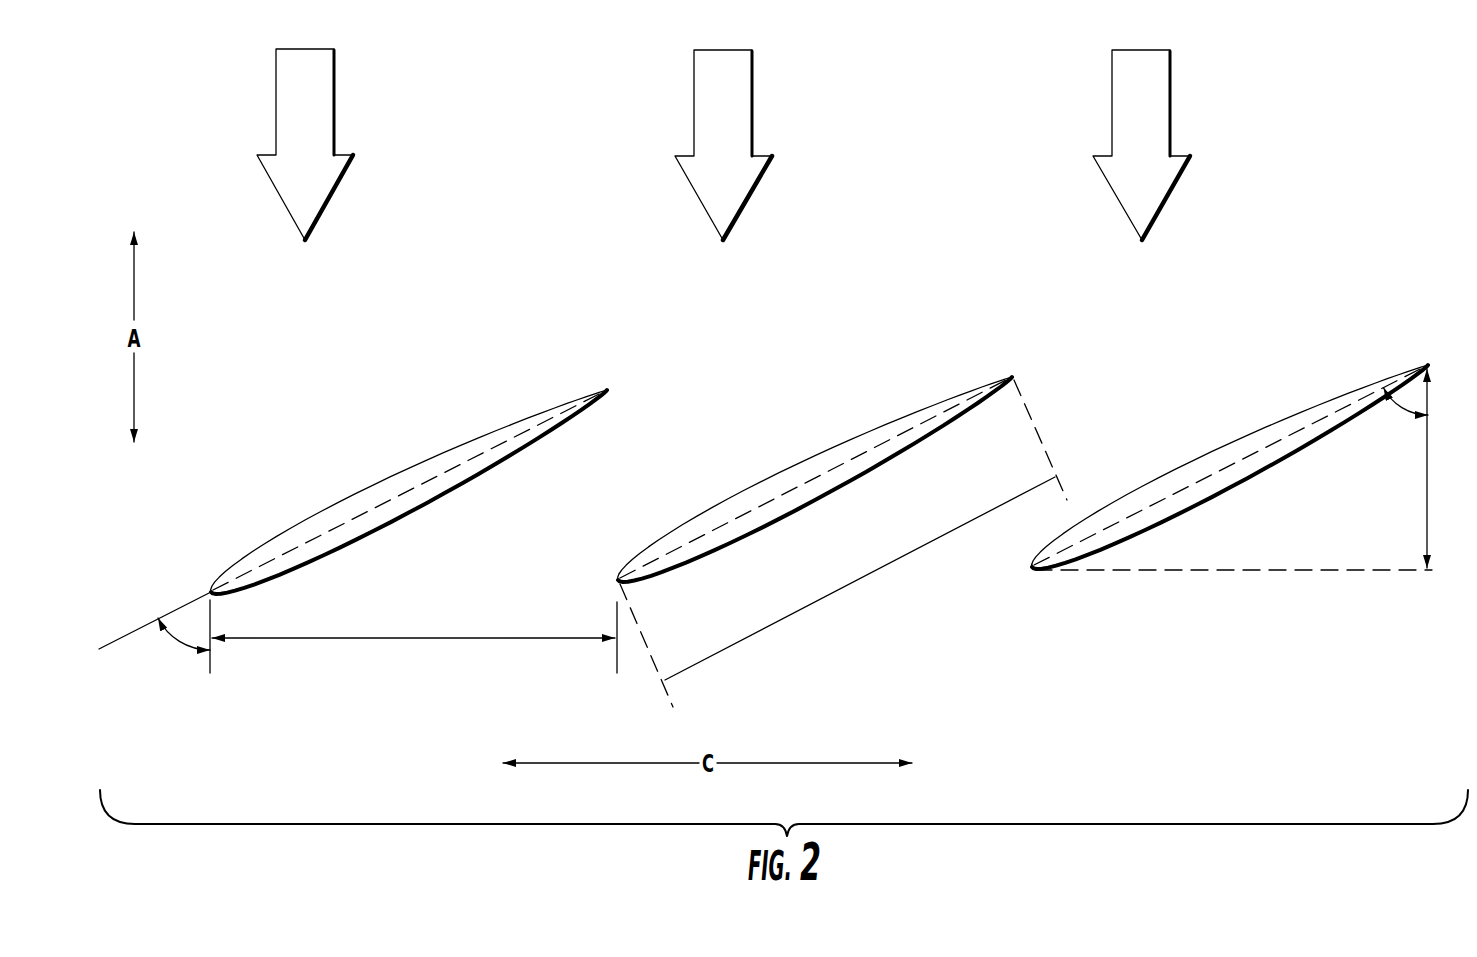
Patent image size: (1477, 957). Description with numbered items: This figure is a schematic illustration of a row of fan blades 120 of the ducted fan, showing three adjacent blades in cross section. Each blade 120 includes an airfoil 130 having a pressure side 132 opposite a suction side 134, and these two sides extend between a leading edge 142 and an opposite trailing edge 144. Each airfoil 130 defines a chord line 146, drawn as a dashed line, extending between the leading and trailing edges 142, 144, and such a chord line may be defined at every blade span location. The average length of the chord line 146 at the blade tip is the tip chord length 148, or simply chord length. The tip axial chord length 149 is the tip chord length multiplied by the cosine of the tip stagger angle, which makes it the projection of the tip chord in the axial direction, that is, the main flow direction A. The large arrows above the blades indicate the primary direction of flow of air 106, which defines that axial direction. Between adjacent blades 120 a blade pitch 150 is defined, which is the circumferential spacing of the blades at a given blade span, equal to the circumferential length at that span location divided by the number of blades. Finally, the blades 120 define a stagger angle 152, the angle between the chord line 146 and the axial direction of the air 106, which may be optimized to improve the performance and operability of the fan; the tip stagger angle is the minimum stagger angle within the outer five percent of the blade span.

The air 106 is at (738, 93).
The blade 120 is at (460, 438).
The airfoil 130 is at (368, 502).
The pressure side 132 is at (1249, 490).
The suction side 134 is at (1245, 430).
The leading edge 142 is at (1431, 363).
The trailing edge 144 is at (1031, 571).
The chord line 146 is at (537, 425).
The tip chord length 148 is at (753, 633).
The tip axial chord length 149 is at (1423, 498).
The blade pitch 150 is at (401, 643).
The stagger angle 152 is at (183, 643).